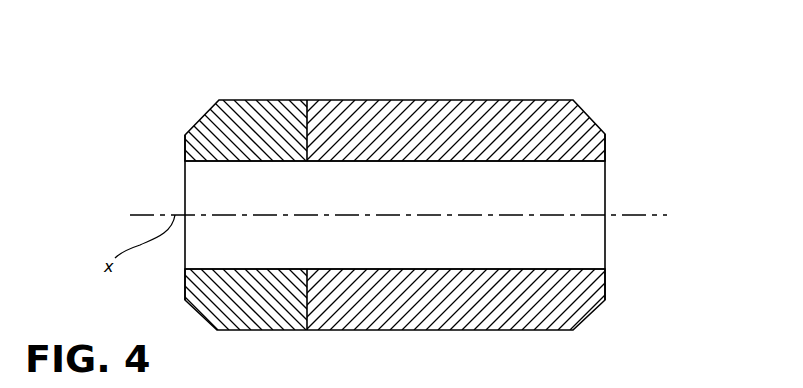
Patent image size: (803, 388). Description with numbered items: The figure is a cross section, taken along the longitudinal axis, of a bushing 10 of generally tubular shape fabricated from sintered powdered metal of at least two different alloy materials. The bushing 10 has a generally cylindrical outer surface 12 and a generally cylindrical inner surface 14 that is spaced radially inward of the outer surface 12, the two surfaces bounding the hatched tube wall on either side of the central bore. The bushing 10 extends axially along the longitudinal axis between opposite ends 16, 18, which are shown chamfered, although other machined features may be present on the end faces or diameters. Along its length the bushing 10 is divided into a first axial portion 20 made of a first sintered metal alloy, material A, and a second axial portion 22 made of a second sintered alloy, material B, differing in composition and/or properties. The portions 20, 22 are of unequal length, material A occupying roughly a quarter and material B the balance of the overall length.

The bushing 10 is at (403, 169).
The outer surface 12 is at (405, 100).
The inner surface 14 is at (570, 161).
The first end 16 is at (185, 152).
The second end 18 is at (605, 147).
The first axial portion 20 is at (252, 100).
The second axial portion 22 is at (520, 117).